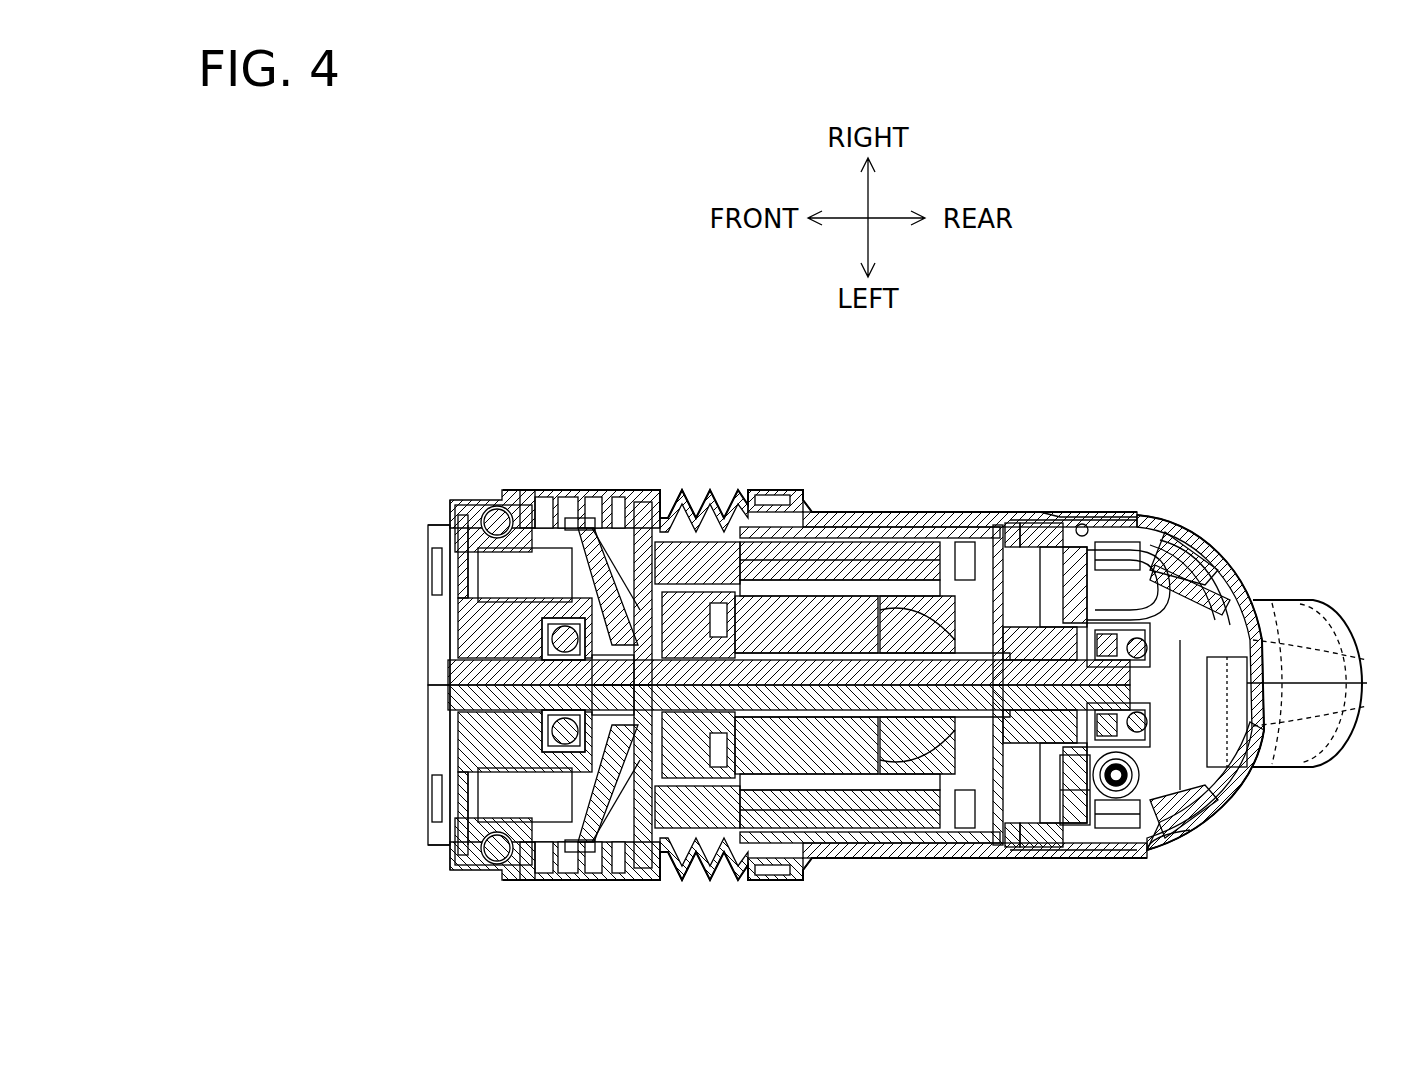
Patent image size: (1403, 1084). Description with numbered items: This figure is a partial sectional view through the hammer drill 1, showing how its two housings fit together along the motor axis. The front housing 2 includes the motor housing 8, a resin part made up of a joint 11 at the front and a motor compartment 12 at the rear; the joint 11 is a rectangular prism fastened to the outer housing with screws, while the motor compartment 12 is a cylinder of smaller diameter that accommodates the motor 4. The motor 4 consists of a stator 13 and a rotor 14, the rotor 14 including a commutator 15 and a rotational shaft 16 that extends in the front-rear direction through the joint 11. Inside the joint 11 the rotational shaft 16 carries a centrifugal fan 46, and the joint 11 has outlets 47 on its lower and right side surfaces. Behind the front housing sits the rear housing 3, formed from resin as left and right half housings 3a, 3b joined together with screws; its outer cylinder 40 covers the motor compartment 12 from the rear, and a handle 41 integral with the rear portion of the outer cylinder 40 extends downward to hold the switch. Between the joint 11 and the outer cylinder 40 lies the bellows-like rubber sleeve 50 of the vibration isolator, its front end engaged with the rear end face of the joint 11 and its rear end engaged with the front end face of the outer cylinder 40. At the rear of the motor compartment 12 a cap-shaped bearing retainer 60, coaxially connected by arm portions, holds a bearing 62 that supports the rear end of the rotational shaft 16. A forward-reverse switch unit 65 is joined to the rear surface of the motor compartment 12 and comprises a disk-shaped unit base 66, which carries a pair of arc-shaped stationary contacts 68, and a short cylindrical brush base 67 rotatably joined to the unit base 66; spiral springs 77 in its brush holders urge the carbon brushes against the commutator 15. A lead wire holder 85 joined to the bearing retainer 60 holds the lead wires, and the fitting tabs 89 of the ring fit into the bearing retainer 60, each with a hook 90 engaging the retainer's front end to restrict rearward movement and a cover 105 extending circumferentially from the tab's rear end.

The hammer drill 1 is at (798, 331).
The front housing 2 is at (477, 470).
The rear housing 3 is at (949, 472).
The half housing 3a is at (893, 860).
The half housing 3b is at (870, 510).
The motor 4 is at (850, 510).
The motor housing 8 is at (639, 476).
The joint 11 is at (538, 490).
The motor compartment 12 is at (810, 488).
The stator 13 is at (757, 490).
The rotor 14 is at (803, 765).
The commutator 15 is at (1062, 518).
The rotational shaft 16 is at (610, 866).
The outer cylinder 40 is at (912, 510).
The handle 41 is at (1283, 600).
The fan 46 is at (580, 865).
The outlets 47 is at (565, 490).
The rubber sleeve 50 is at (690, 490).
The bearing retainer 60 is at (1205, 530).
The bearing 62 is at (1175, 525).
The forward-reverse switch unit 65 is at (1045, 515).
The unit base 66 is at (964, 510).
The brush base 67 is at (1018, 510).
The stationary contacts 68 is at (995, 510).
The spiral springs 77 is at (1104, 820).
The lead wire holder 85 is at (1135, 520).
The fitting tabs 89 is at (1160, 525).
The hook 90 is at (1082, 520).
The cover 105 is at (1110, 520).